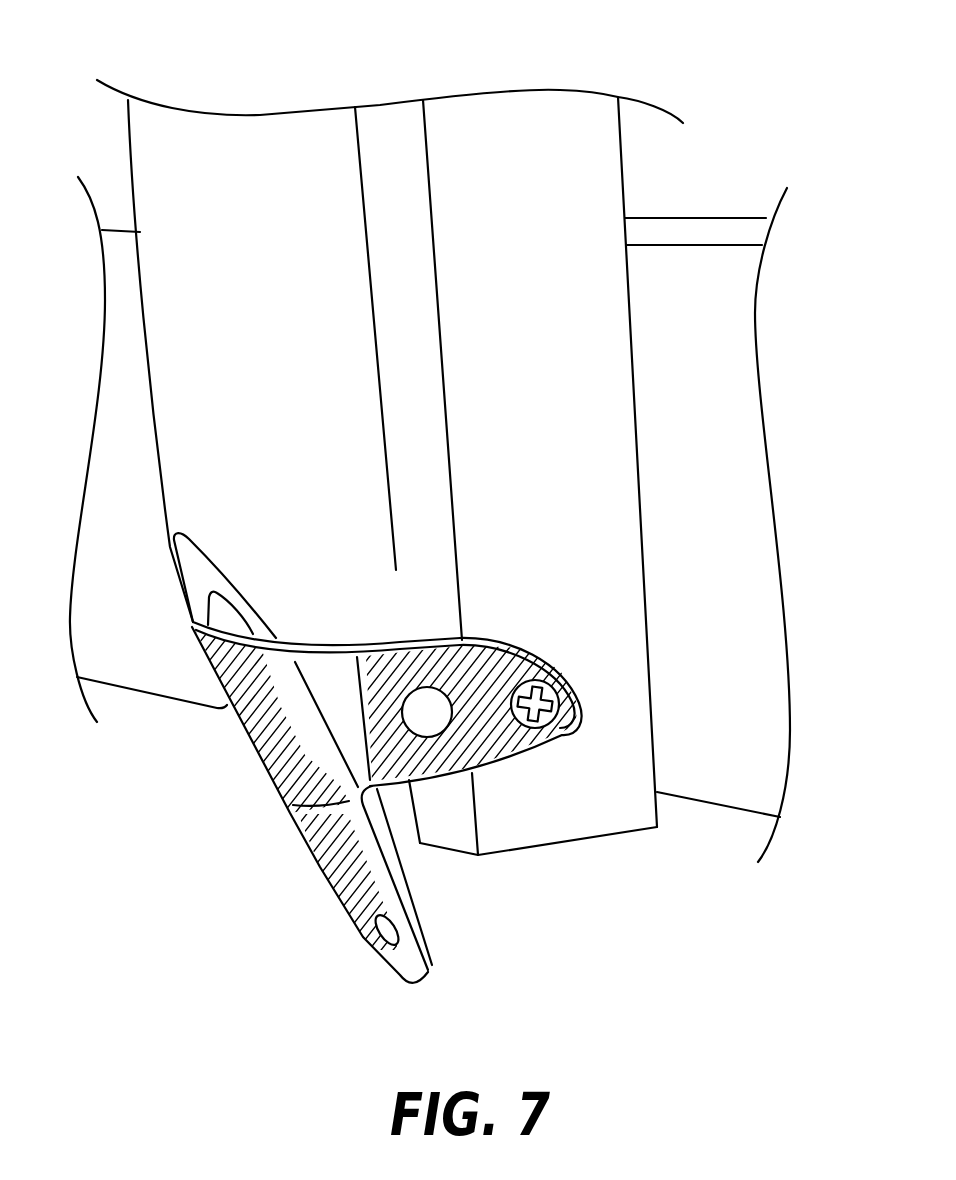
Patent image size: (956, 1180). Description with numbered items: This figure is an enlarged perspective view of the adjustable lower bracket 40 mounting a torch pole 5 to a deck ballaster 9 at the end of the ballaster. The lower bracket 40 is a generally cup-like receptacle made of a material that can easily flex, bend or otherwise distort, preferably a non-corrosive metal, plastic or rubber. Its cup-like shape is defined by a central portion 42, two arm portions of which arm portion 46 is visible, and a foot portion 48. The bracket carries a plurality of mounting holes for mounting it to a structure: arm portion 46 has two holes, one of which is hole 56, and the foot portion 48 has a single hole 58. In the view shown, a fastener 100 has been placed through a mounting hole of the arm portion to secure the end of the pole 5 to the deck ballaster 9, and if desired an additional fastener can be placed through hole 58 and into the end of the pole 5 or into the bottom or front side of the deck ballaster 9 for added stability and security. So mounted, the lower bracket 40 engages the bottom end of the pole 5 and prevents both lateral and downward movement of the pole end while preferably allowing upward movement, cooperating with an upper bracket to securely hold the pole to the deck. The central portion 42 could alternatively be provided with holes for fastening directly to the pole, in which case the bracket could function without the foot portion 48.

The torch pole 5 is at (452, 438).
The deck ballaster 9 is at (605, 475).
The lower bracket 40 is at (398, 788).
The central portion 42 is at (278, 732).
The arm portion 46 is at (483, 750).
The foot portion 48 is at (352, 860).
The hole 56 is at (437, 682).
The hole 58 is at (380, 943).
The fasteners 100 is at (547, 720).